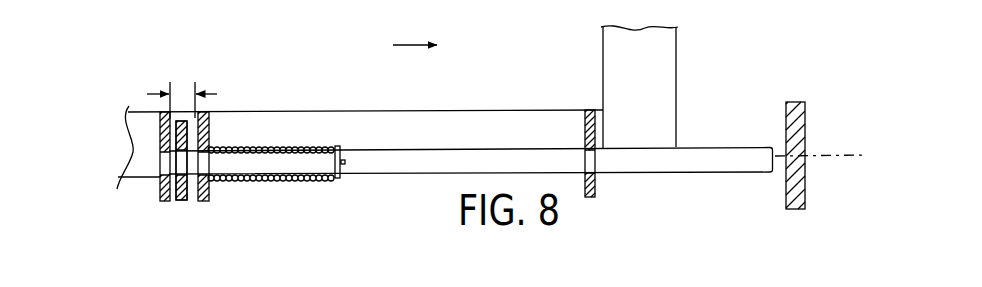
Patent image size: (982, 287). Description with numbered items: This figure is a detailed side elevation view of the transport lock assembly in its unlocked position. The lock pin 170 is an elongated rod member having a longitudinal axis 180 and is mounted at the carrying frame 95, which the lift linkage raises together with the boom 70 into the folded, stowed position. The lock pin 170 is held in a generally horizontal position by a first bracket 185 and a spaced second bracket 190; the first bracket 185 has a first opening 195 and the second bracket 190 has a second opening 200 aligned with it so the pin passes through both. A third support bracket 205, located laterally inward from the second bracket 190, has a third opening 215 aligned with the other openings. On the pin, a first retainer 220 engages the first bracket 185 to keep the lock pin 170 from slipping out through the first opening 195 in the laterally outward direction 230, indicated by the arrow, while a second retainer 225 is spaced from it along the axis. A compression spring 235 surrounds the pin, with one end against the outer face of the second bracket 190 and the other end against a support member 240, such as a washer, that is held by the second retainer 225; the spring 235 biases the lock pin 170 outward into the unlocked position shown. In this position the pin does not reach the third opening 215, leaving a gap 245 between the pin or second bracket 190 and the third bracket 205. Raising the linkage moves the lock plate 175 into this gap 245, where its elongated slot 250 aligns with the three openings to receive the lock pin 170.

The boom 70 is at (795, 102).
The carrying frame 95 is at (679, 51).
The lock pin 170 is at (730, 173).
The lock plate 175 is at (178, 200).
The longitudinal axis 180 is at (840, 154).
The first bracket 185 is at (588, 197).
The second bracket 190 is at (205, 200).
The first opening 195 is at (595, 157).
The second opening 200 is at (209, 160).
The third support bracket 205 is at (163, 200).
The third opening 215 is at (157, 168).
The first retainer 220 is at (583, 158).
The second retainer 225 is at (346, 158).
The laterally outward direction 230 is at (403, 43).
The spring 235 is at (245, 180).
The support member 240 is at (341, 146).
The gap 245 is at (217, 93).
The elongated slot 250 is at (190, 149).